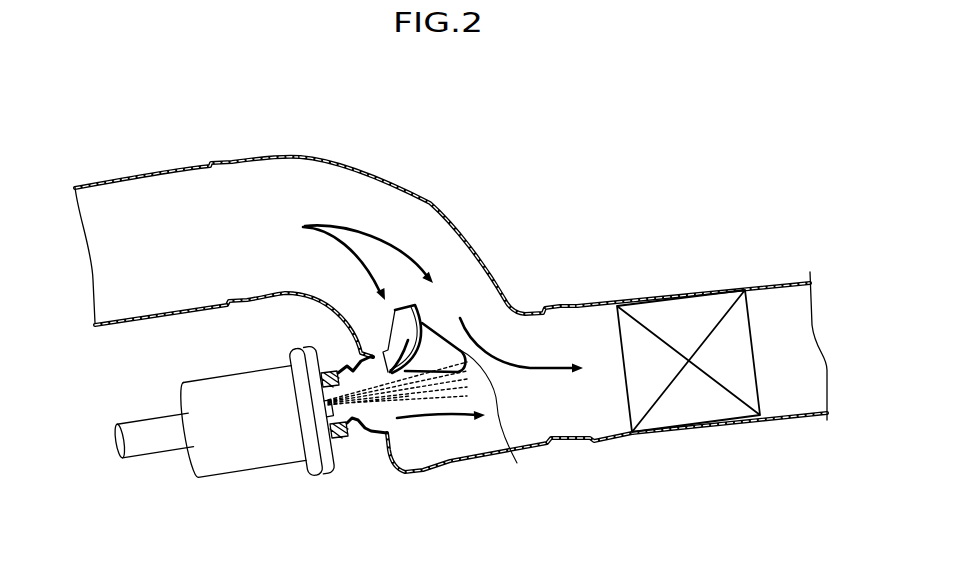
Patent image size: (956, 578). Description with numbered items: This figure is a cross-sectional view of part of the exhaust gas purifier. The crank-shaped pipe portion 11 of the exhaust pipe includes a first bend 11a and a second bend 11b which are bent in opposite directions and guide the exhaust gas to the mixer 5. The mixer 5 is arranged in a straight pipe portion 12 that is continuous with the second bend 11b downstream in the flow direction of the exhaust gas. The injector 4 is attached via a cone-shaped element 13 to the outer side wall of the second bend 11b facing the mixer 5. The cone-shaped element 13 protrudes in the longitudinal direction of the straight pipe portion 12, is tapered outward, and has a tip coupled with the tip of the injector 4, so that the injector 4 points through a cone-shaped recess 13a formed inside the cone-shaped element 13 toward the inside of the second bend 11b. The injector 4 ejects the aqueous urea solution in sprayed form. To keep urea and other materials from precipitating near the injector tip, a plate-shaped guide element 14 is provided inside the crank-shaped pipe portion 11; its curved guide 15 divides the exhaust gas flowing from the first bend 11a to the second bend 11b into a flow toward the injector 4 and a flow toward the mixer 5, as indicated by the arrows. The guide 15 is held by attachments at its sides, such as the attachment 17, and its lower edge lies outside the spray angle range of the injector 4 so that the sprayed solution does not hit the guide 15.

The injector 4 is at (217, 375).
The mixer 5 is at (755, 355).
The crank-shaped pipe portion 11 is at (290, 158).
The first bend 11a is at (413, 190).
The second bend 11b is at (402, 472).
The straight pipe portion 12 is at (773, 283).
The cone-shaped element 13 is at (350, 357).
The cone-shaped recess 13a is at (358, 428).
The guide element 14 is at (435, 322).
The guide 15 is at (420, 310).
The attachment 17 is at (495, 423).